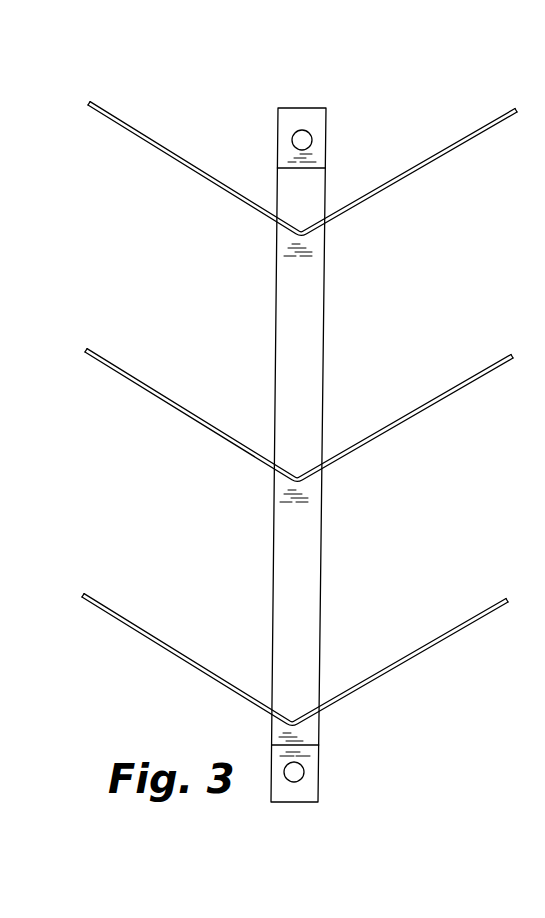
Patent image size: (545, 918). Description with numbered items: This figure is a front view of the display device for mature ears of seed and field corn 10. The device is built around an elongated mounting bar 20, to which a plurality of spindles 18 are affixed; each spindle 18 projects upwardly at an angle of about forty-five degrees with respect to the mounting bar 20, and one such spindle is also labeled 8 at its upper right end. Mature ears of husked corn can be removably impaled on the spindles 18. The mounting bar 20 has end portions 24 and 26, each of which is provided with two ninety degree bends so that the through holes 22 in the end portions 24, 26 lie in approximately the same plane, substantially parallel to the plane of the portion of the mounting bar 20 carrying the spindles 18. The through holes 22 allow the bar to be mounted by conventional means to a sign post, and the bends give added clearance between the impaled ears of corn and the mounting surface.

The display device for mature ears of seed and field corn 10 is at (299, 457).
The end portion of mounting bar 26 is at (332, 95).
The through holes 22 is at (313, 140).
The arm 8 is at (452, 152).
The spindles 18 is at (135, 138).
The mounting bar 20 is at (312, 345).
The end portion of mounting bar 24 is at (322, 816).